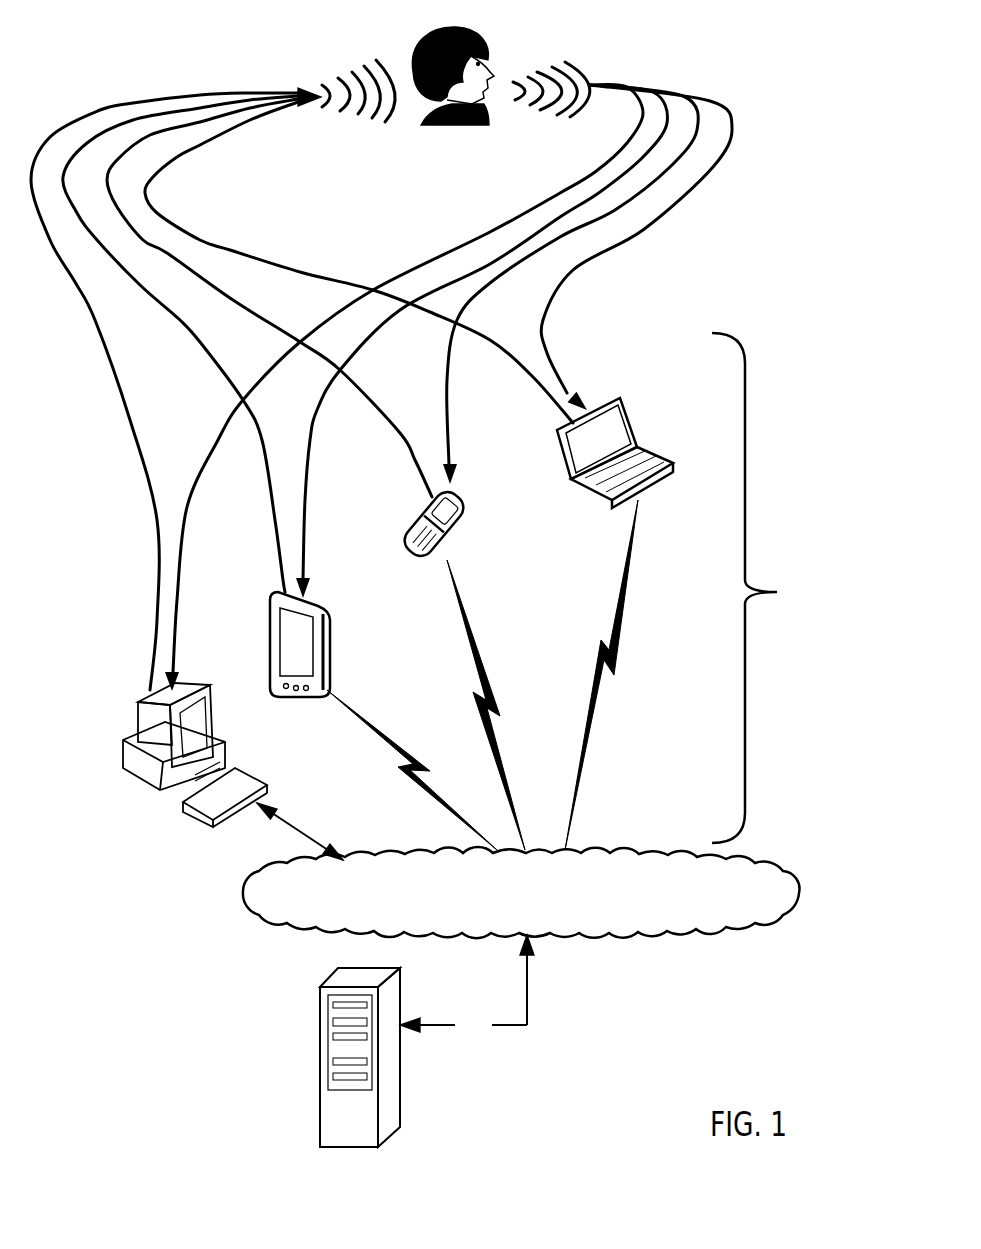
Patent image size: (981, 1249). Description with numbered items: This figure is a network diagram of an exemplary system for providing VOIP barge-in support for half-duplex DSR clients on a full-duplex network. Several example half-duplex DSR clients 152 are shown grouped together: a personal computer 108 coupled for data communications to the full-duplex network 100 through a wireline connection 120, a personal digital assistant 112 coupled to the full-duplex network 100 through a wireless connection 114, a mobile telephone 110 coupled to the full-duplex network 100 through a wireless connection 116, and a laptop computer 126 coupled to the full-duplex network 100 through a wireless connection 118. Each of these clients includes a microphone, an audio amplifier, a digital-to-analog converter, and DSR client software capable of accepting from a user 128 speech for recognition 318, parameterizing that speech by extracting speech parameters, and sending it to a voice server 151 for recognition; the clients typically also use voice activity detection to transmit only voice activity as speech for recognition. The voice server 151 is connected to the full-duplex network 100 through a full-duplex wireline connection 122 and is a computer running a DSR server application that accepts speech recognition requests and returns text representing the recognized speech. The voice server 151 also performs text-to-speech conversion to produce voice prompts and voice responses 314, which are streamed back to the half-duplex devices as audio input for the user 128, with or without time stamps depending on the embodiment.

The full-duplex network 100 is at (635, 904).
The personal computer 108 is at (117, 764).
The mobile telephone 110 is at (510, 554).
The personal digital assistant 112 is at (363, 649).
The wireless connection 114 is at (425, 723).
The wireless connection 116 is at (508, 649).
The wireless connection 118 is at (658, 713).
The wireline connection 120 is at (330, 831).
The full-duplex wireline connection 122 is at (488, 1033).
The laptop computer 126 is at (673, 424).
The user 128 is at (490, 156).
The voice server 151 is at (557, 1100).
The half-duplex DSR clients 152 is at (815, 633).
The voice prompts and voice responses 314 is at (358, 66).
The speech for recognition 318 is at (560, 64).